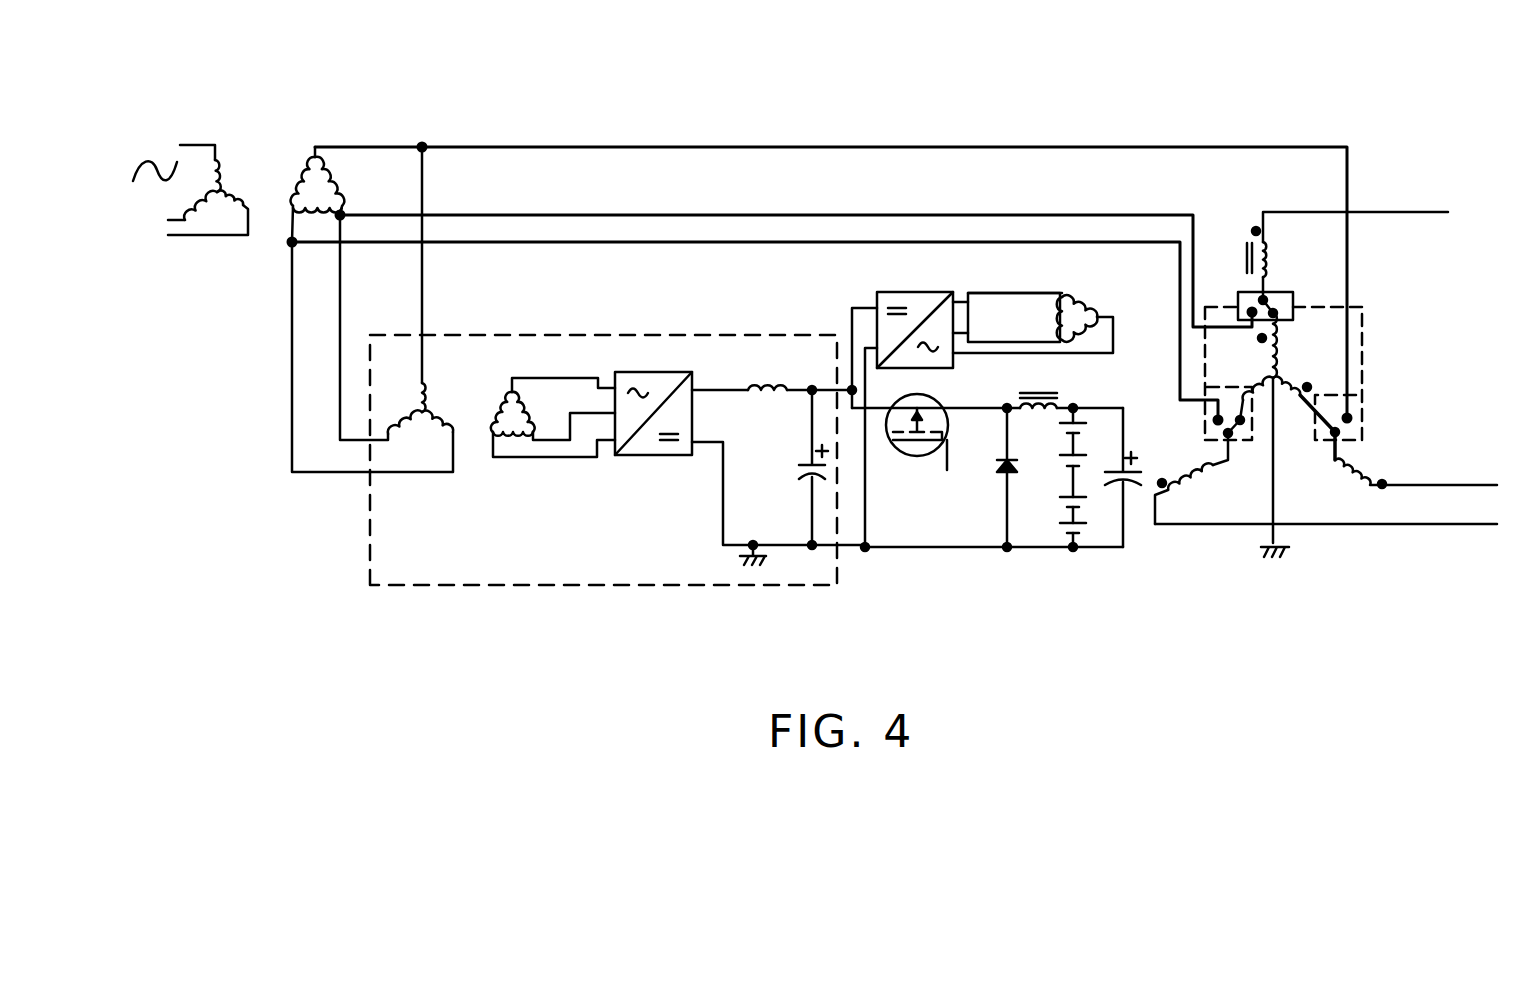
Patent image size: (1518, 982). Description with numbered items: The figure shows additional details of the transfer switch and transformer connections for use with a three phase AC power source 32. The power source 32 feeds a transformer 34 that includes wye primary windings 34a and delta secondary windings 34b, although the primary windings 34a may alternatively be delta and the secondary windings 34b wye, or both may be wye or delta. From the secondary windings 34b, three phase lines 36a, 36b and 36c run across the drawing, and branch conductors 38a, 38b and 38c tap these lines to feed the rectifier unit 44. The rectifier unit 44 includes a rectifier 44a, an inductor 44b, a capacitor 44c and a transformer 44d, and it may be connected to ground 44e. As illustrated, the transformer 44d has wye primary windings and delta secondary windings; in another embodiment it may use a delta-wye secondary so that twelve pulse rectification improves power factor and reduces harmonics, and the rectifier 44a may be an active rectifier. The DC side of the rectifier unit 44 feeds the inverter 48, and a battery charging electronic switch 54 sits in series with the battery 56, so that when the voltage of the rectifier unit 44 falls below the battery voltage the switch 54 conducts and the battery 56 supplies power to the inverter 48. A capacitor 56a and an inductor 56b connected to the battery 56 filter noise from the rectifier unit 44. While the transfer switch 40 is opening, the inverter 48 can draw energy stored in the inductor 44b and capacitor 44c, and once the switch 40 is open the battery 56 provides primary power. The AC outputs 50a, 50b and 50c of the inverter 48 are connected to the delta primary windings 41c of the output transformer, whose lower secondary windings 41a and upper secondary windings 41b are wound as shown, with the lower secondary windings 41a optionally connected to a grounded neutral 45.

The AC power source 32 is at (155, 190).
The transformer 34 is at (256, 172).
The primary windings 34a is at (234, 185).
The secondary windings 34b is at (298, 156).
The line 36a is at (628, 147).
The line 36b is at (626, 215).
The line 36c is at (626, 243).
The branch conductor 38a is at (422, 290).
The branch conductor 38b is at (341, 290).
The branch conductor 38c is at (292, 301).
The transfer switch 40 is at (1363, 338).
The lower secondary windings 41a is at (1260, 358).
The upper secondary windings 41b is at (1243, 256).
The delta primary windings 41c is at (1092, 298).
The rectifier unit 44 is at (540, 587).
The rectifier 44a is at (641, 456).
The inductor 44b is at (766, 381).
The capacitor 44c is at (798, 472).
The transformer 44d is at (483, 412).
The ground 44e is at (741, 559).
The grounded neutral 45 is at (1281, 556).
The inverter 48 is at (877, 292).
The AC output 50a is at (990, 293).
The AC output 50b is at (1006, 317).
The AC output 50c is at (1110, 348).
The battery charging electronic switch 54 is at (948, 430).
The battery 56 is at (1055, 463).
The capacitor 56a is at (1125, 486).
The inductor 56b is at (1020, 394).